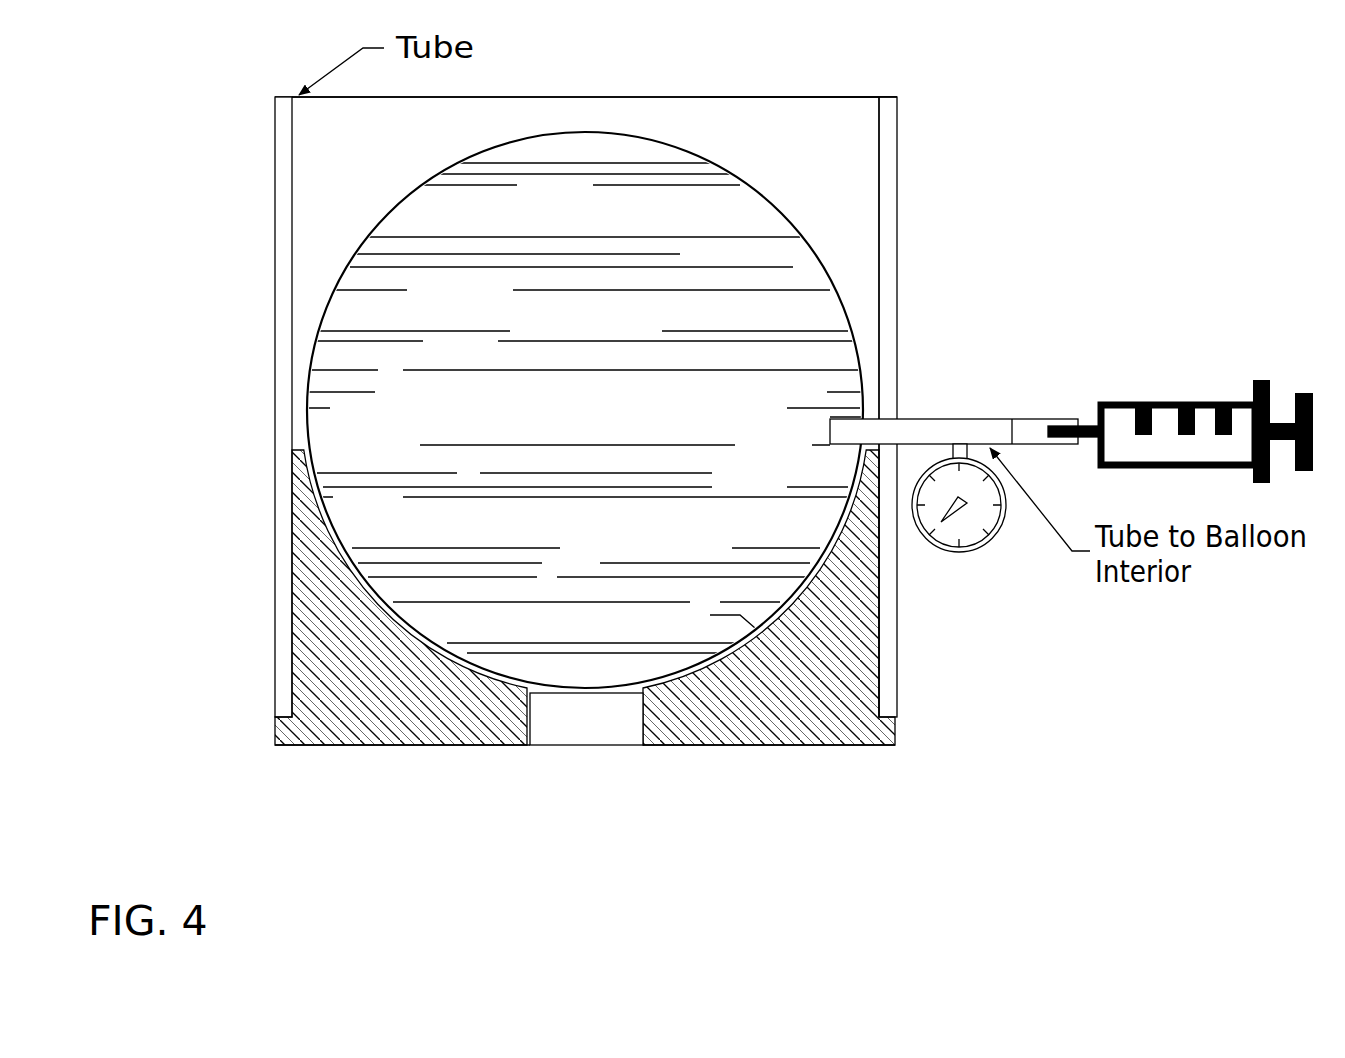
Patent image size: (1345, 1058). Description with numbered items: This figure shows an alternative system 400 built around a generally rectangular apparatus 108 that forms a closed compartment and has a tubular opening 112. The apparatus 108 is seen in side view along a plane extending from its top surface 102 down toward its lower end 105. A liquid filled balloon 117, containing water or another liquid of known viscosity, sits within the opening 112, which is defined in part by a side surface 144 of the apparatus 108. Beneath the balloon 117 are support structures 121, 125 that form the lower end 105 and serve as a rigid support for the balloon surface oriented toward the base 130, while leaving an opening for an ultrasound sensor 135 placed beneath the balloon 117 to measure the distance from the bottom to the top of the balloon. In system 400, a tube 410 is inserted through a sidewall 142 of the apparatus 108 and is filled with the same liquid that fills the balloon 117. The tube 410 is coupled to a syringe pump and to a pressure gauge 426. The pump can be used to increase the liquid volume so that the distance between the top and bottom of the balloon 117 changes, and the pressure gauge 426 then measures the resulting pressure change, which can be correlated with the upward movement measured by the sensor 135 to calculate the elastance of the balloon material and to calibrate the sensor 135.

The system 400 is at (592, 447).
The top surface 102 is at (596, 95).
The tubular opening 112 is at (805, 79).
The apparatus 108 is at (899, 195).
The sidewall 142 is at (889, 283).
The side surface 144 is at (274, 392).
The liquid filled balloon 117 is at (585, 410).
The tube 410 is at (917, 413).
The pressure gauge 426 is at (965, 554).
The support structure 121 is at (320, 716).
The support structure 125 is at (860, 735).
The ultrasound sensor 135 is at (586, 719).
The lower end 105 is at (449, 749).
The base 130 is at (787, 750).